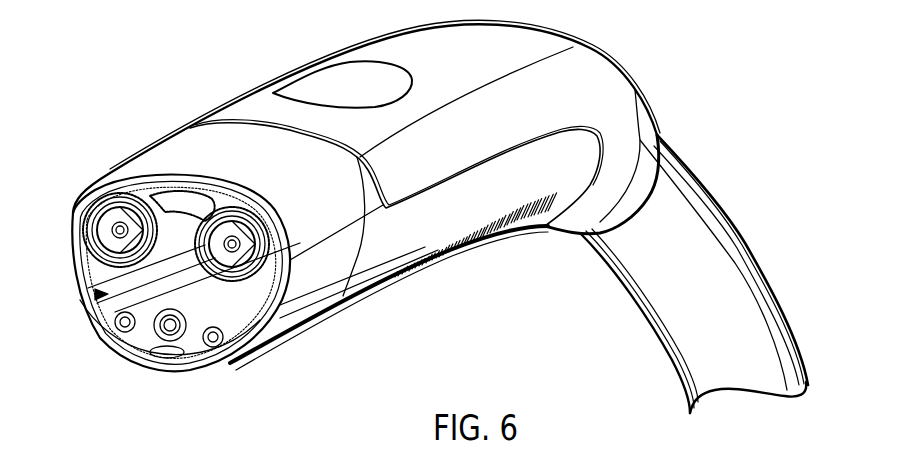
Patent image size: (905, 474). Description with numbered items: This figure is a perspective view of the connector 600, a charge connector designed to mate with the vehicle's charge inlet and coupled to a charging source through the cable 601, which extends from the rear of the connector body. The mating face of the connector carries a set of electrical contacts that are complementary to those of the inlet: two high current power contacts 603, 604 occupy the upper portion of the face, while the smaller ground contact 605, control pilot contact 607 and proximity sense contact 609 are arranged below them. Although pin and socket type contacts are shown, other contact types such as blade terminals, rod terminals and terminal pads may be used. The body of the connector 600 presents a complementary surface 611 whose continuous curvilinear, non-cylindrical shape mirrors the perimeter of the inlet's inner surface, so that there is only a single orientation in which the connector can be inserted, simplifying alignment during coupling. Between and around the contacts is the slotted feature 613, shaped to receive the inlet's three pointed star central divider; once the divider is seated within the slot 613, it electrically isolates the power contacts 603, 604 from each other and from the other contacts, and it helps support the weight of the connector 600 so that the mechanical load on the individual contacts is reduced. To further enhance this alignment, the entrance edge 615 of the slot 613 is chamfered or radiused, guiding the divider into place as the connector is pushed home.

The connector 600 is at (193, 84).
The cable 601 is at (703, 317).
The power contact 603 is at (110, 203).
The power contact 604 is at (227, 218).
The ground contact 605 is at (176, 340).
The control pilot contact 607 is at (215, 347).
The proximity sense contact 609 is at (128, 332).
The complementary surface 611 is at (307, 195).
The slotted feature 613 is at (103, 283).
The entrance edge 615 is at (130, 310).